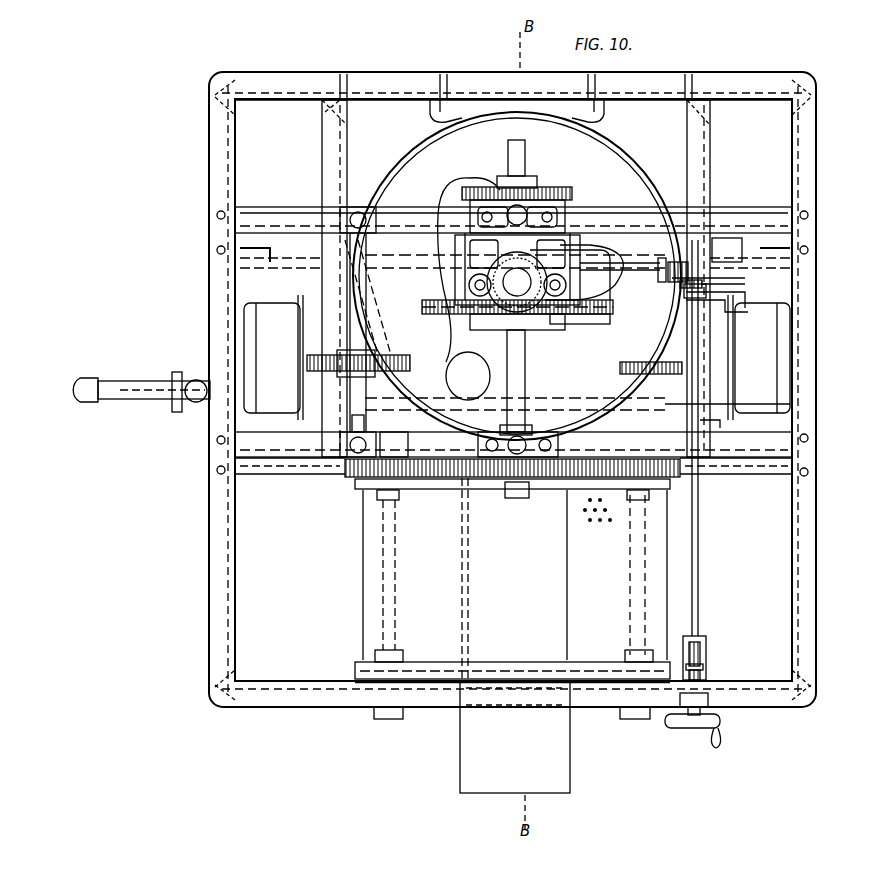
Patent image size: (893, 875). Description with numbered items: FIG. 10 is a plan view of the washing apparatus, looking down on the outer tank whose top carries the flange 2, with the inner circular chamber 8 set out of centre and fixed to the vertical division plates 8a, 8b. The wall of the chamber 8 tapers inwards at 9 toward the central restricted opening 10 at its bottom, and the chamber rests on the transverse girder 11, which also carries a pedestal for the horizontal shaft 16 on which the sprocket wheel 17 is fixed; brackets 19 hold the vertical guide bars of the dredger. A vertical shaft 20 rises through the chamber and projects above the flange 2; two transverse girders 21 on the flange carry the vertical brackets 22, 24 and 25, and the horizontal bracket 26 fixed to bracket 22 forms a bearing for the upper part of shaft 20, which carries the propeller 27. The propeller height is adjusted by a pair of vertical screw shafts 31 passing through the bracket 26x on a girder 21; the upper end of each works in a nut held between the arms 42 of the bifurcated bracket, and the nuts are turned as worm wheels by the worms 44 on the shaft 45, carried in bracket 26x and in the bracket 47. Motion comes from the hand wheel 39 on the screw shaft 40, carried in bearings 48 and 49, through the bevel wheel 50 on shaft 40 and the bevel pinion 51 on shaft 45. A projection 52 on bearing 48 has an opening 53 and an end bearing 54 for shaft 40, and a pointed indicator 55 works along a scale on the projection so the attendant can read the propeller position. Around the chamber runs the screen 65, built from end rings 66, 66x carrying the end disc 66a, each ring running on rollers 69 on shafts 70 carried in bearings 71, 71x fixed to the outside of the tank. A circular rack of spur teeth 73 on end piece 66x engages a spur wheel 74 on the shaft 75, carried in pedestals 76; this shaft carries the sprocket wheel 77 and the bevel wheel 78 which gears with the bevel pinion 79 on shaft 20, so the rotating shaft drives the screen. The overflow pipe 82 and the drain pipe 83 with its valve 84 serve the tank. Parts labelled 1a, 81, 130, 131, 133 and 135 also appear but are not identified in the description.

The frame corner 1a is at (262, 95).
The flange 2 is at (516, 393).
The inner circular chamber 8 is at (392, 148).
The vertical division plate 8a is at (336, 154).
The vertical division plate 8b is at (704, 180).
The tapered wall portion 9 is at (515, 277).
The central restricted opening 10 is at (528, 318).
The transverse girder 11 is at (515, 271).
The horizontal shaft 16 is at (672, 410).
The sprocket wheel 17 is at (632, 362).
The bracket 19 is at (722, 426).
The vertical shaft 20 is at (527, 340).
The transverse girder 21 is at (285, 477).
The vertical bracket 22 is at (576, 222).
The vertical bracket 24 is at (340, 218).
The vertical bracket 25 is at (345, 458).
The horizontal bracket 26 is at (575, 243).
The bracket 26x is at (462, 246).
The propeller 27 is at (531, 289).
The vertical screw shaft 31 is at (466, 285).
The hand wheel 39 is at (692, 728).
The screw shaft 40 is at (698, 354).
The arm 42 is at (465, 318).
The worm 44 is at (517, 254).
The shaft 45 is at (623, 266).
The bracket 47 is at (727, 250).
The bearing 48 is at (708, 703).
The bearing 49 is at (700, 292).
The bevel wheel 50 is at (708, 278).
The bevel pinion 51 is at (691, 268).
The projection 52 is at (703, 667).
The opening 53 is at (700, 651).
The bearing 54 is at (700, 636).
The pointed indicator 55 is at (700, 675).
The screen 65 is at (617, 575).
The end ring 66 is at (356, 668).
The end disc 66a is at (510, 682).
The end ring 66x is at (440, 491).
The roller 69 is at (385, 494).
The shaft 70 is at (392, 584).
The bearing 71 is at (389, 720).
The bearing 71x is at (636, 720).
The circular rack of spur teeth 73 is at (470, 480).
The spur wheel 74 is at (540, 480).
The shaft 75 is at (517, 152).
The pedestal 76 is at (540, 212).
The sprocket wheel 77 is at (540, 192).
The bevel wheel 78 is at (602, 322).
The bevel pinion 79 is at (498, 330).
The base box 81 is at (515, 737).
The overflow pipe 82 is at (118, 399).
The drain pipe 83 is at (148, 381).
The valve 84 is at (196, 380).
The side box 130 is at (244, 336).
The side plate 131 is at (298, 370).
The gear 133 is at (358, 356).
The link 135 is at (360, 284).